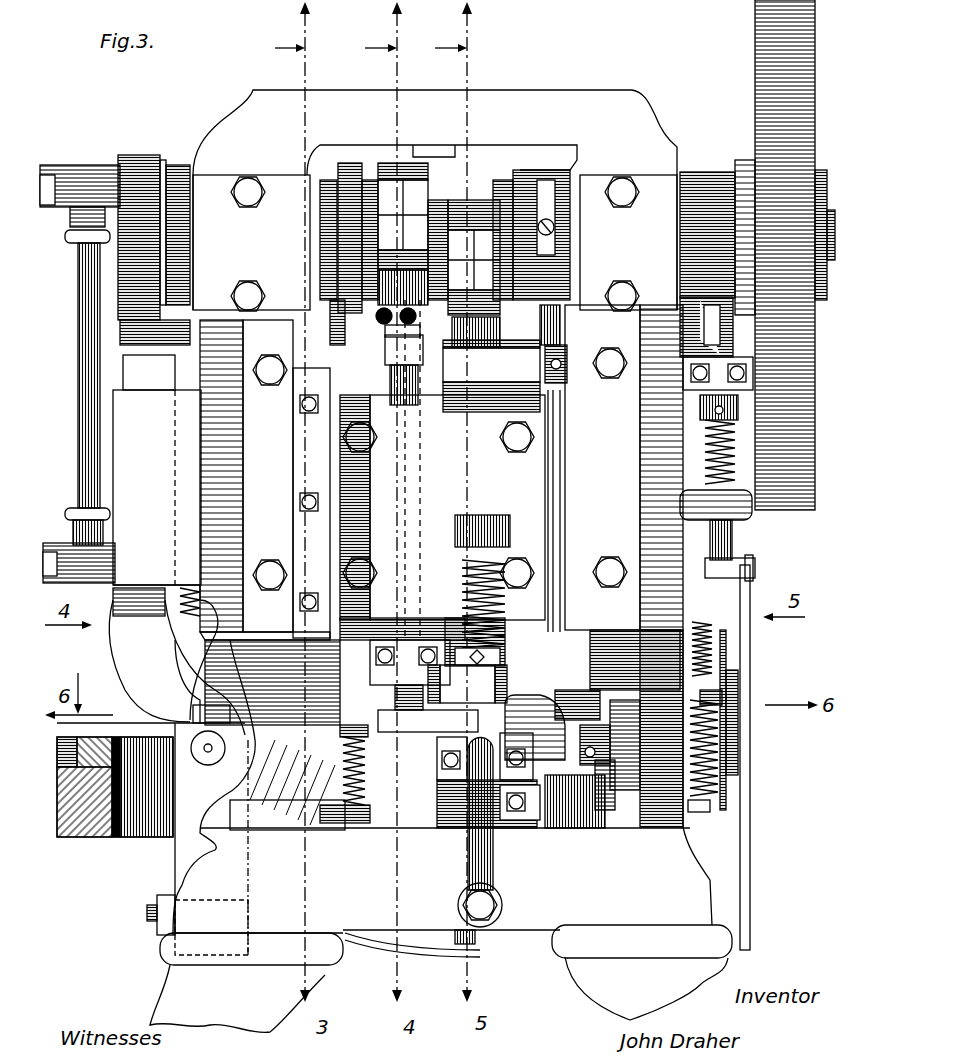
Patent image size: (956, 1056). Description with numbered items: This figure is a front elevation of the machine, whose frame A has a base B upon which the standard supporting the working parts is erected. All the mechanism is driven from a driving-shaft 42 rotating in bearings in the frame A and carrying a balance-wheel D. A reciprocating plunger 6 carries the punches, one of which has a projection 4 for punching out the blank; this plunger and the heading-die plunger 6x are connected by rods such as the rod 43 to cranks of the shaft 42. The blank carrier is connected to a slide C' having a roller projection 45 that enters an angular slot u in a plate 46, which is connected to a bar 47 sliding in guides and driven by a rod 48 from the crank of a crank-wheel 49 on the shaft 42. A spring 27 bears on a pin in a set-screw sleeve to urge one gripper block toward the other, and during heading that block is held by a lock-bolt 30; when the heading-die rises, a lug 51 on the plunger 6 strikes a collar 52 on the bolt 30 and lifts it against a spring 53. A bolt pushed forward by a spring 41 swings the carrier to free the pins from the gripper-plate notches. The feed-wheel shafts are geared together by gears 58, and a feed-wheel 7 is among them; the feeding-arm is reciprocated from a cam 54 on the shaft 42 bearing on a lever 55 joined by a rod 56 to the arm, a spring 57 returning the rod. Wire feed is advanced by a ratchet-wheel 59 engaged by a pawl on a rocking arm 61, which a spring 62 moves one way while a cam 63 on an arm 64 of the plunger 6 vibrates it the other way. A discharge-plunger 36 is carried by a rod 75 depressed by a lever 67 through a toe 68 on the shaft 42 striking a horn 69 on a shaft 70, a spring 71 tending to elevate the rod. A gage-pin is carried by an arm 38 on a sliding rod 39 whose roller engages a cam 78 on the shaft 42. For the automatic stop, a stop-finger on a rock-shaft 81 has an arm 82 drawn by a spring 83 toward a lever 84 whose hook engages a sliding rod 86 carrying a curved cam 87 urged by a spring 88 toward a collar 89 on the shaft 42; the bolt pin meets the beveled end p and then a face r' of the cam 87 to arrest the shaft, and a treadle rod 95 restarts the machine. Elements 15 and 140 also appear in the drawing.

The frame A is at (641, 117).
The base B is at (441, 831).
The balance-wheel D is at (795, 255).
The slide C' is at (115, 787).
The cam 78 is at (348, 164).
The projection 4 is at (402, 250).
The rod 43 is at (474, 273).
The toe 68 is at (573, 247).
The collar 89 is at (717, 237).
The crank-wheel 49 is at (154, 250).
The cam 54 is at (180, 250).
The driving-shaft 42 is at (115, 264).
The rod 48 is at (80, 414).
The bar 47 is at (157, 470).
The lever 55 is at (195, 352).
The sliding rod 39 is at (318, 340).
The spring 57 is at (196, 606).
The gears 58 is at (292, 636).
The rod 56 is at (150, 662).
The angular slot u is at (199, 715).
The roller projection 45 is at (208, 766).
The plate 46 is at (180, 860).
The spring 71 is at (392, 955).
The lever 67 is at (491, 376).
The rod 75 is at (437, 402).
The horn 69 is at (548, 323).
The shaft 70 is at (562, 368).
The curved cam 87 is at (692, 314).
The beveled end p is at (713, 325).
The face r' is at (663, 349).
The spring 88 is at (703, 435).
The sliding rod 86 is at (735, 545).
The rod 95 is at (748, 868).
The lever 84 is at (725, 647).
The arm 82 is at (736, 732).
The spring 83 is at (712, 792).
The rock-shaft 81 is at (692, 728).
The spring 53 is at (463, 566).
The plunger 6 is at (397, 620).
The plunger 6x is at (500, 652).
The collar 52 is at (505, 658).
The lug 51 is at (467, 684).
The feed-wheel 7 is at (404, 686).
The plate 15 is at (392, 714).
The discharge-plunger 36 is at (452, 715).
The lock-bolt 30 is at (487, 723).
The spring 27 is at (482, 843).
The spring 41 is at (535, 719).
The arm 64 is at (577, 705).
The spring 62 is at (581, 743).
The cam 63 is at (608, 750).
The rocking arm 61 is at (606, 783).
The ratchet-wheel 59 is at (586, 824).
The arm 38 is at (338, 822).
The spring 140 is at (379, 775).